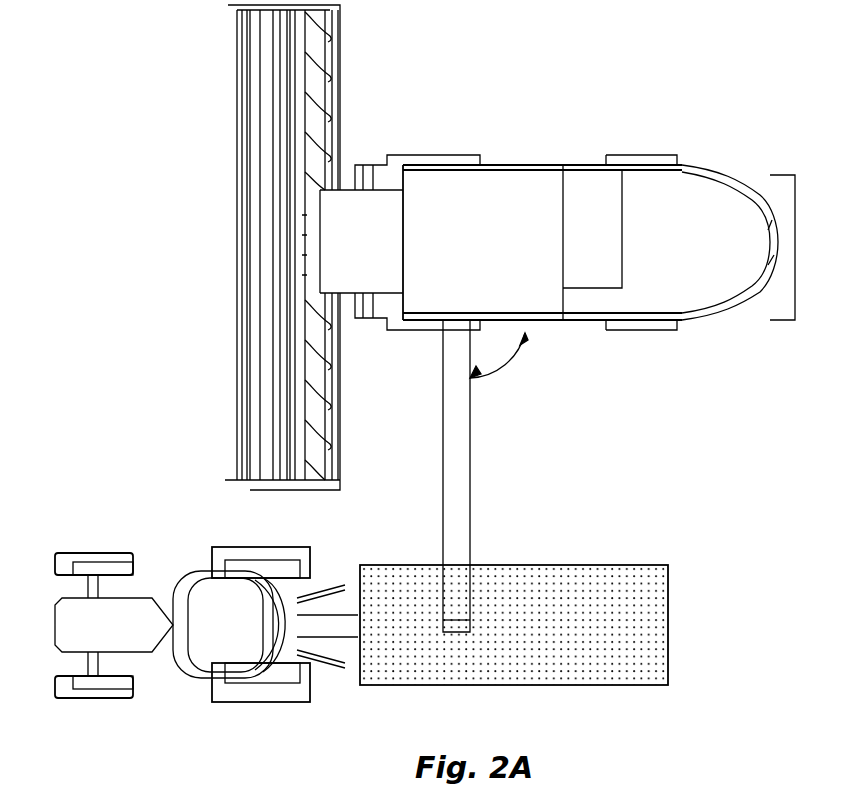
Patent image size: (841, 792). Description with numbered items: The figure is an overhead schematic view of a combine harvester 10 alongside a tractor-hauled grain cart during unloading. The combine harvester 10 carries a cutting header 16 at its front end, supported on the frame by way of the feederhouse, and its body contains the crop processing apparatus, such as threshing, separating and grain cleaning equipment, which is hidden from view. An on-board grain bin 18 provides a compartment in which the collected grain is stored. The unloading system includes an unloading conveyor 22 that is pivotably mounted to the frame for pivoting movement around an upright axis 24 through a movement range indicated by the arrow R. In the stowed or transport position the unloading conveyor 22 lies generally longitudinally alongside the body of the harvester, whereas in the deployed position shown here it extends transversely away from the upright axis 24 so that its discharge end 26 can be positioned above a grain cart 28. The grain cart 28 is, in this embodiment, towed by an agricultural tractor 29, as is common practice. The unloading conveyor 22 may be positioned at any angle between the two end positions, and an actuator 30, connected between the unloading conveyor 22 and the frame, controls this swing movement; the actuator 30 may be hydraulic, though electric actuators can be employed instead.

The combine harvester 10 is at (738, 134).
The cutting header 16 is at (237, 85).
The grain bin 18 is at (527, 187).
The unloading conveyor 22 is at (471, 467).
The upright axis 24 is at (456, 324).
The discharge end 26 is at (469, 614).
The grain cart 28 is at (645, 565).
The agricultural tractor 29 is at (60, 533).
The actuator 30 is at (530, 378).